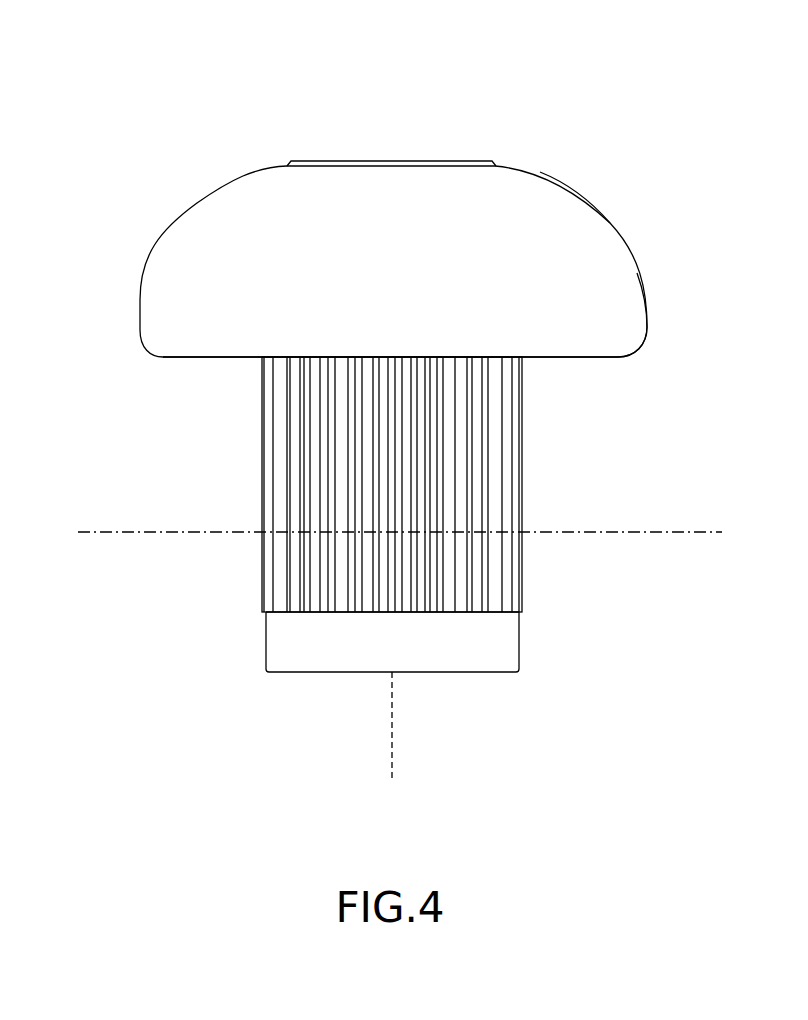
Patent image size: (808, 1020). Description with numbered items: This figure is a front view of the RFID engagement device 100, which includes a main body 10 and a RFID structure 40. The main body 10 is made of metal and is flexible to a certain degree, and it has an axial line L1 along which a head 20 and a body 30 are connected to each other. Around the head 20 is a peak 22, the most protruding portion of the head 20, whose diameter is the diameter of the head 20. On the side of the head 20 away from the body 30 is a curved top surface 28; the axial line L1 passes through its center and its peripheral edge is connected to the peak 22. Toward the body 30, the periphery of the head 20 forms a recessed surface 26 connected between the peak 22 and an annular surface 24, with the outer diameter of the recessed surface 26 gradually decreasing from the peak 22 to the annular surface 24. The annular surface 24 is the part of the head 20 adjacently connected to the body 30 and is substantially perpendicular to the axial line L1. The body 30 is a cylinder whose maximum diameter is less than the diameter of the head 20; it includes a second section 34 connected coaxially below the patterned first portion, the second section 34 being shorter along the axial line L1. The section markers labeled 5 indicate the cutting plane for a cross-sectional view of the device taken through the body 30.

The RFID engagement device 100 is at (467, 384).
The RFID structure 40 is at (467, 225).
The main body 10 is at (536, 160).
The head 20 is at (467, 256).
The curved top surface 28 is at (615, 228).
The peak 22 is at (648, 325).
The recessed surface 26 is at (645, 338).
The annular surface 24 is at (580, 357).
The body 30 is at (392, 687).
The second section 34 is at (312, 652).
The section line 5- 5 is at (93, 530).
The axial line L1 is at (397, 741).